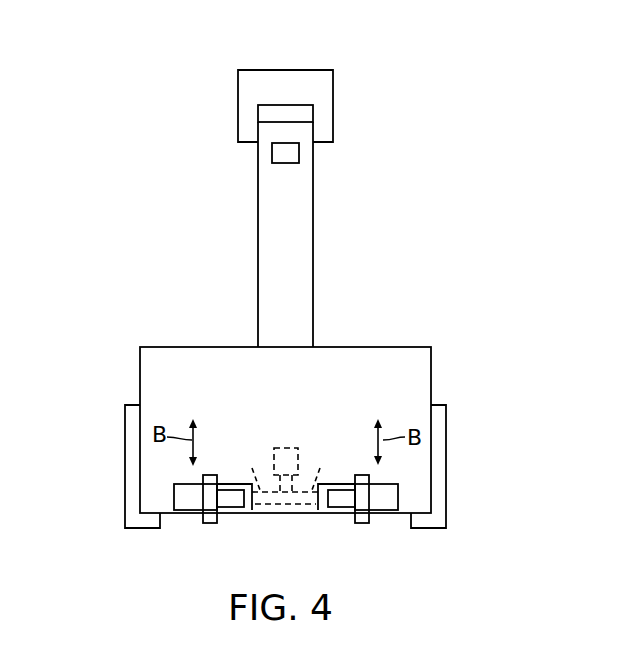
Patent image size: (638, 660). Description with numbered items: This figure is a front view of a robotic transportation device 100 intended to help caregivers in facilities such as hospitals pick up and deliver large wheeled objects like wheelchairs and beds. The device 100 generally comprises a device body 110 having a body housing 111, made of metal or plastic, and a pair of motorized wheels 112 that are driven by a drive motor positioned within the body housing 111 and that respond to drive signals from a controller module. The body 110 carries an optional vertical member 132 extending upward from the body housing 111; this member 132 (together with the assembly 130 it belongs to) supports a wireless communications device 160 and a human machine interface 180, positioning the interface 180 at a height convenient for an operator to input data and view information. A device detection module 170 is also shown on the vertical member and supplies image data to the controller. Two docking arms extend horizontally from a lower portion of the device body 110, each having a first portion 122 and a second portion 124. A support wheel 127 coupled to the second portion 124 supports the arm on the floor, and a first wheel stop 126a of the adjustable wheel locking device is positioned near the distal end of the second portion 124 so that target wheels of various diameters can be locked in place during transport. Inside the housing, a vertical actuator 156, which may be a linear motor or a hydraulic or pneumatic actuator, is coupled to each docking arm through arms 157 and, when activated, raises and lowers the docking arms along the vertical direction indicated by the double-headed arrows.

The robotic transportation device 100 is at (110, 131).
The device body 110 is at (467, 291).
The body housing 111 is at (431, 372).
The motorized wheels 112 is at (125, 468).
The first portion 122 is at (228, 487).
The second portion 124 is at (232, 510).
The first wheel stop 126a is at (185, 505).
The support wheel 127 is at (210, 522).
The plunger assembly 130 is at (183, 262).
The vertical member 132 is at (313, 237).
The vertical actuator 156 is at (261, 433).
The arms 157 is at (288, 466).
The wireless communications device 160 is at (313, 112).
The device detection module 170 is at (299, 153).
The human machine interface 180 is at (333, 73).